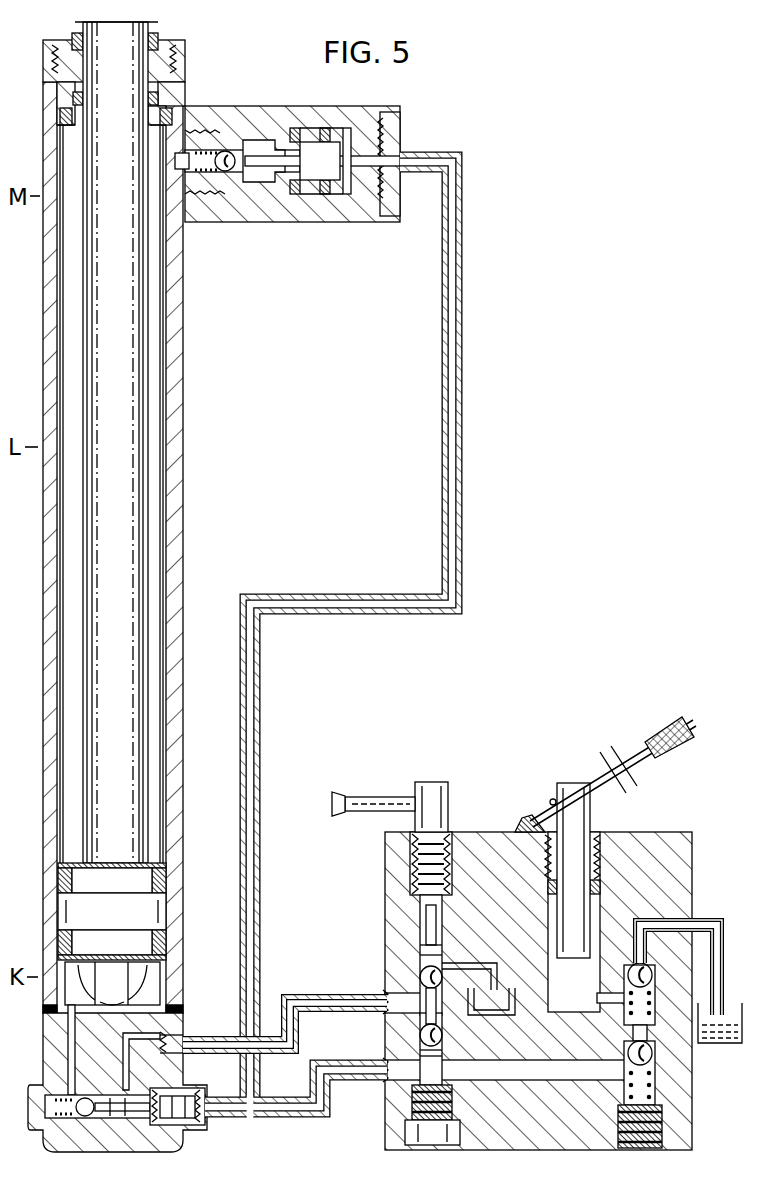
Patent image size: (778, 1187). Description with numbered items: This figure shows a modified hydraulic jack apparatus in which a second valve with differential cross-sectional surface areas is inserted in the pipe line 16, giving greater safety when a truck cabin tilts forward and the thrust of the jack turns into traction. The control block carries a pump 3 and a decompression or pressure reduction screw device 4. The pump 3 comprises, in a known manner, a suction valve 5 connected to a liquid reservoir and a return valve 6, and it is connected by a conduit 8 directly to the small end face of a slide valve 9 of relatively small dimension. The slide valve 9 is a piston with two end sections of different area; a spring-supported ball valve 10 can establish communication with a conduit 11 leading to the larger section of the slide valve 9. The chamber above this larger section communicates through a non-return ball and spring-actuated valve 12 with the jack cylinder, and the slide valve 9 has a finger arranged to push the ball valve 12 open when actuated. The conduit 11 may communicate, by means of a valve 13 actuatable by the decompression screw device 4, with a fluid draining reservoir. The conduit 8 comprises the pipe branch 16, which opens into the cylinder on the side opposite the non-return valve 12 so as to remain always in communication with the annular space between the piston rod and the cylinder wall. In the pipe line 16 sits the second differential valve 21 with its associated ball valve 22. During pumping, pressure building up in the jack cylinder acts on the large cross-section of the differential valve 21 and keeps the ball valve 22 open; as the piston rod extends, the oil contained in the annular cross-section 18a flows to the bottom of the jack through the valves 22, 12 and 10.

The pump 3 is at (591, 816).
The decompression or pressure reduction screw device 4 is at (445, 812).
The suction valve 5 is at (650, 968).
The return valve 6 is at (655, 1043).
The conduit 8 is at (234, 1110).
The slide valve 9 is at (150, 1098).
The spring-supported ball valve 10 is at (415, 1023).
The conduit 11 is at (228, 1037).
The non-return ball and spring-actuated valve 12 is at (87, 1090).
The valve 13 is at (420, 970).
The pipe branch 16 is at (458, 487).
The annular cross-section 18a is at (155, 418).
The second differential valve 21 is at (318, 205).
The ball valve 22 is at (225, 172).